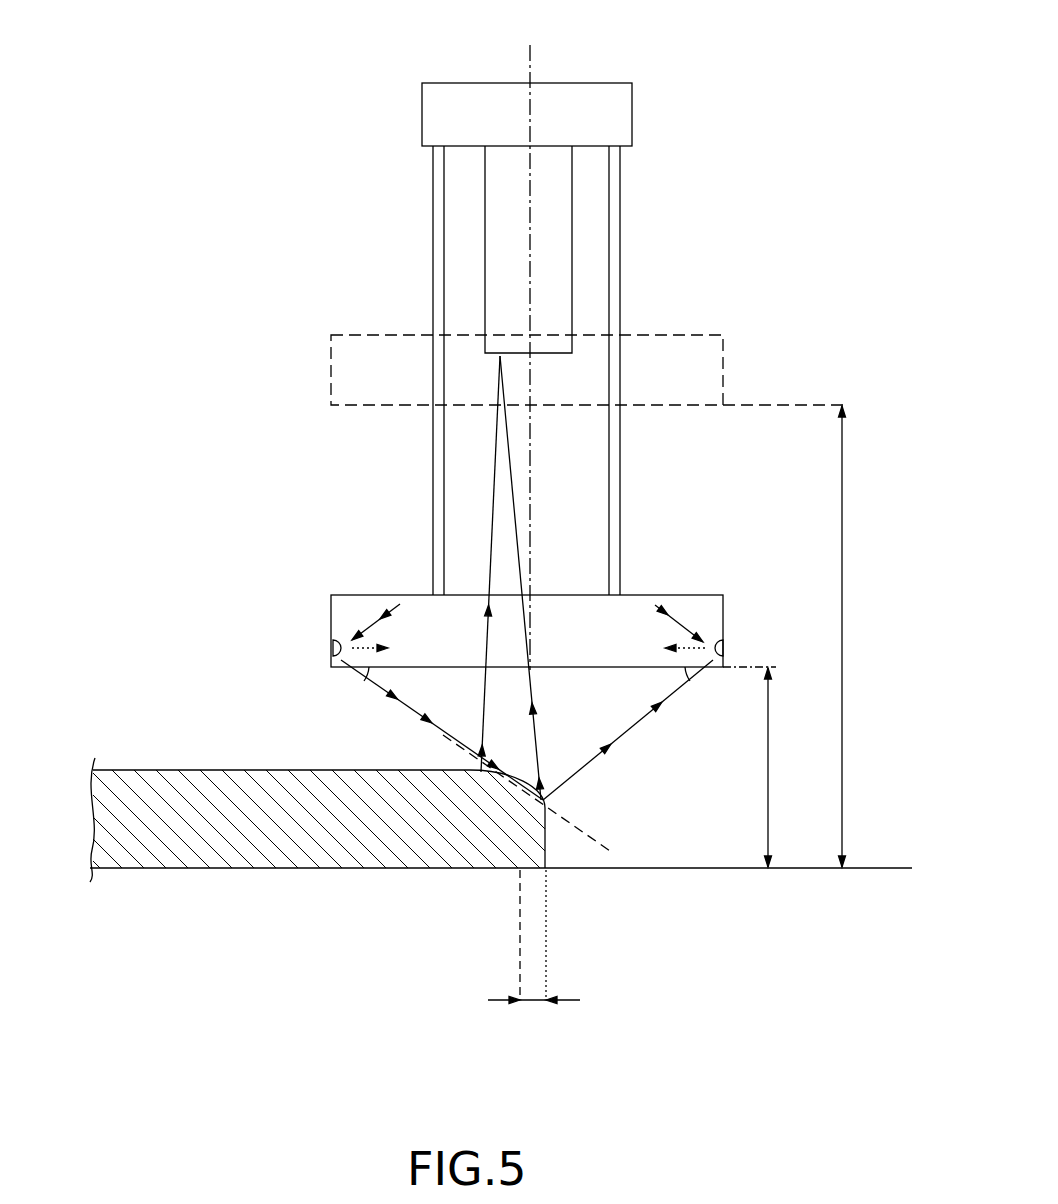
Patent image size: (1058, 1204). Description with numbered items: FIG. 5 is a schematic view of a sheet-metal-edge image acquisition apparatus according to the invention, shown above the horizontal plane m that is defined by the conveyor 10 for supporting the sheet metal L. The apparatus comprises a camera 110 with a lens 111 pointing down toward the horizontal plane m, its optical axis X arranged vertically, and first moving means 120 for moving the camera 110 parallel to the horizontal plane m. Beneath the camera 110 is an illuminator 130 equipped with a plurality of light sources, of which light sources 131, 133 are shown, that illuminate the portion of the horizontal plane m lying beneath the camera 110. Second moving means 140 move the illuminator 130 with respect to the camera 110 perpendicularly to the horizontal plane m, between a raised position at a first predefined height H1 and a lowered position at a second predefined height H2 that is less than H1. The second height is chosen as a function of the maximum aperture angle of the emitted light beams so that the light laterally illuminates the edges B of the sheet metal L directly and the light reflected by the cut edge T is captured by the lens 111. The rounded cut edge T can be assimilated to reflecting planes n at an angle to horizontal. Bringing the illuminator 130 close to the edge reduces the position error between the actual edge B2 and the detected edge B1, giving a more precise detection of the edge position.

The conveyor 10 is at (740, 912).
The camera 110 is at (580, 292).
The lens 111 is at (505, 350).
The first moving means 120 is at (420, 100).
The illuminator 130 is at (725, 355).
The light source 131 is at (330, 648).
The light source 133 is at (725, 648).
The second moving means 140 is at (432, 235).
The optical axis X is at (532, 52).
The sheet metal L is at (208, 797).
The horizontal plane m is at (910, 870).
The cut edge T is at (562, 790).
The reflecting plane n is at (613, 852).
The edge B is at (562, 838).
The detected edge B1 is at (518, 950).
The actual edge B2 is at (548, 960).
The first predefined height H1 is at (785, 636).
The second predefined height H2 is at (749, 767).